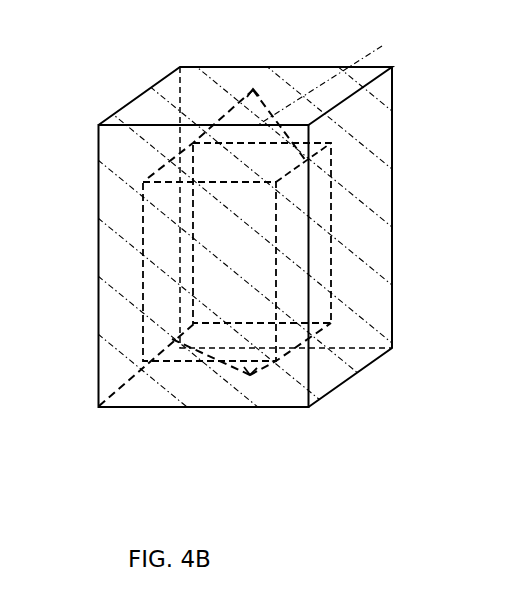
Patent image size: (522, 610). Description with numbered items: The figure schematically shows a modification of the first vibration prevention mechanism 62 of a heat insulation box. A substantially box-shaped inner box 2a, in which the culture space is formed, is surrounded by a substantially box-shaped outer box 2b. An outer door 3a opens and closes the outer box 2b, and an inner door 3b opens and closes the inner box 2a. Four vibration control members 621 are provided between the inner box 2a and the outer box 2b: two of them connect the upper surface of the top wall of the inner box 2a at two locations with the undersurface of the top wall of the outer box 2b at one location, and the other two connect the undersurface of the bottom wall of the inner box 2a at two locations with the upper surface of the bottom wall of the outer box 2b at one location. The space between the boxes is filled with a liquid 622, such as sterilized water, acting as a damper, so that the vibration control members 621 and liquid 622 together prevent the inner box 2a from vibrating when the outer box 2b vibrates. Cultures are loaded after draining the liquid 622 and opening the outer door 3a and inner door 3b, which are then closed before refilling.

The first vibration prevention mechanism 62 is at (106, 101).
The vibration control member 621 is at (180, 81).
The liquid 622 is at (368, 193).
The inner box 2a is at (243, 150).
The outer box 2b is at (309, 67).
The outer door 3a is at (160, 250).
The inner door 3b is at (98, 202).